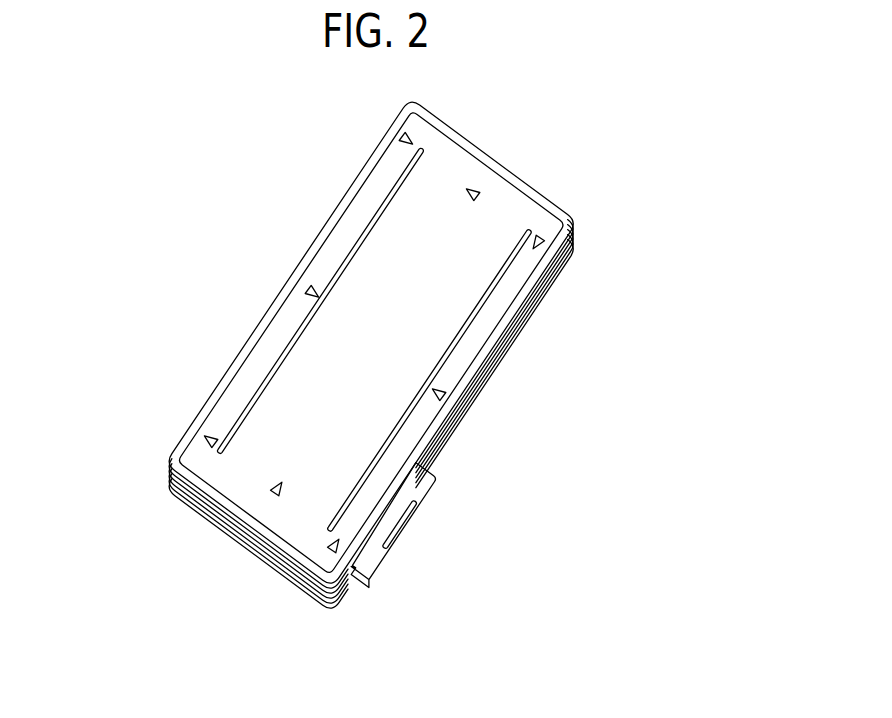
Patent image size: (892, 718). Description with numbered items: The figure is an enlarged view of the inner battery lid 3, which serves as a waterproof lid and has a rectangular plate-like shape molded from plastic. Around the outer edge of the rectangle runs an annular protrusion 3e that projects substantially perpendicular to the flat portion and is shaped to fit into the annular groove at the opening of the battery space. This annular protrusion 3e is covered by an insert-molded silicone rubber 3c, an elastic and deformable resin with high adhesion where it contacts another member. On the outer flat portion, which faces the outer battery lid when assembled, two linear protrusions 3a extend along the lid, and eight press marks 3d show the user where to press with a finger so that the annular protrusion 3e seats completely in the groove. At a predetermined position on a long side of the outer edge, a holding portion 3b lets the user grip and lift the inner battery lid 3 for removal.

The inner battery lid 3 is at (616, 221).
The linear protrusion 3a is at (365, 240).
The holding portion 3b is at (410, 533).
The silicone rubber 3c is at (457, 135).
The press mark 3d is at (401, 140).
The annular protrusion 3e is at (485, 390).